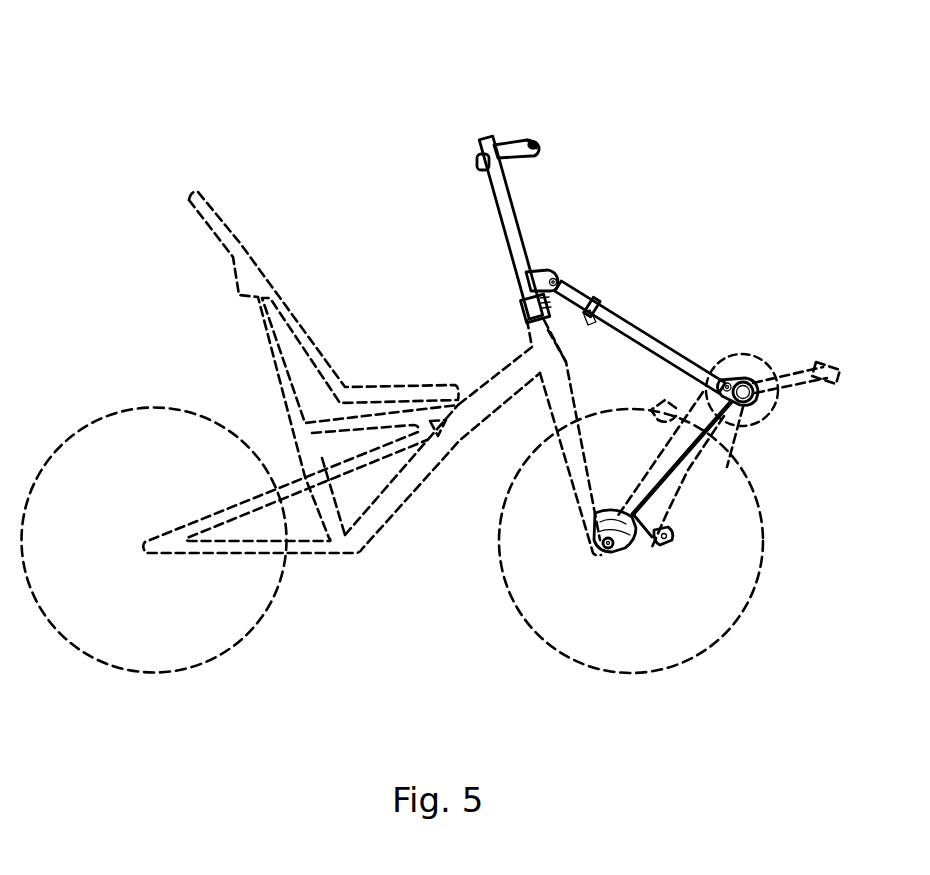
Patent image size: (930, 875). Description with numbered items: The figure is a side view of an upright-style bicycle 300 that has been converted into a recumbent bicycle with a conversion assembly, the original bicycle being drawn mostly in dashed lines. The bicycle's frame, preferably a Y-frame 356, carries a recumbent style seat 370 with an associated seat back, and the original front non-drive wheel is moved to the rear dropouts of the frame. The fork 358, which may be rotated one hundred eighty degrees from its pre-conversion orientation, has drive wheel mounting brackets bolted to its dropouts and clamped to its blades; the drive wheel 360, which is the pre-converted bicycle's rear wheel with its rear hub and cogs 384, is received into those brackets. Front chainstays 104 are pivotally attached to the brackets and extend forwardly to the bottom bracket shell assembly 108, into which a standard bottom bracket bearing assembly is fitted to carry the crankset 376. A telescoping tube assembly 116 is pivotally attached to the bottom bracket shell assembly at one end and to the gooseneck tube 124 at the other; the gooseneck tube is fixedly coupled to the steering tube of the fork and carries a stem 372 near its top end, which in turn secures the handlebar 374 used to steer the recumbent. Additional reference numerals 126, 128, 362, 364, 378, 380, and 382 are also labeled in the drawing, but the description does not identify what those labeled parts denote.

The upright-style bicycle 300 is at (362, 304).
The front chainstays 104 is at (700, 447).
The bottom bracket shell assembly 108 is at (757, 398).
The telescoping tube assembly 116 is at (633, 327).
The gooseneck tube 124 is at (503, 223).
The pivot bracket 126 is at (546, 273).
The clamp 128 is at (523, 310).
The Y-frame 356 is at (393, 517).
The front fork 358 is at (562, 472).
The drive wheel 360 is at (659, 676).
The front wheel 362 is at (100, 418).
The head tube 364 is at (568, 358).
The recumbent style seat 370 is at (237, 233).
The stem 372 is at (510, 140).
The handlebar 374 is at (545, 157).
The crankset 376 is at (742, 355).
The rack mount 378 is at (822, 362).
The swing arm 380 is at (700, 530).
The drive link 382 is at (643, 560).
The rear hub with associated cogs 384 is at (622, 558).